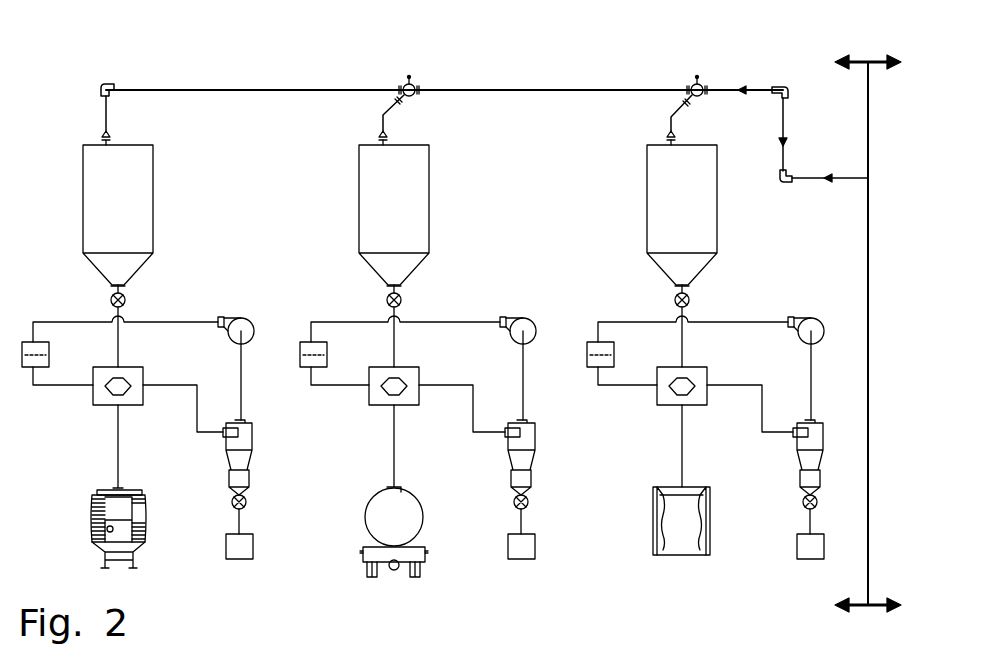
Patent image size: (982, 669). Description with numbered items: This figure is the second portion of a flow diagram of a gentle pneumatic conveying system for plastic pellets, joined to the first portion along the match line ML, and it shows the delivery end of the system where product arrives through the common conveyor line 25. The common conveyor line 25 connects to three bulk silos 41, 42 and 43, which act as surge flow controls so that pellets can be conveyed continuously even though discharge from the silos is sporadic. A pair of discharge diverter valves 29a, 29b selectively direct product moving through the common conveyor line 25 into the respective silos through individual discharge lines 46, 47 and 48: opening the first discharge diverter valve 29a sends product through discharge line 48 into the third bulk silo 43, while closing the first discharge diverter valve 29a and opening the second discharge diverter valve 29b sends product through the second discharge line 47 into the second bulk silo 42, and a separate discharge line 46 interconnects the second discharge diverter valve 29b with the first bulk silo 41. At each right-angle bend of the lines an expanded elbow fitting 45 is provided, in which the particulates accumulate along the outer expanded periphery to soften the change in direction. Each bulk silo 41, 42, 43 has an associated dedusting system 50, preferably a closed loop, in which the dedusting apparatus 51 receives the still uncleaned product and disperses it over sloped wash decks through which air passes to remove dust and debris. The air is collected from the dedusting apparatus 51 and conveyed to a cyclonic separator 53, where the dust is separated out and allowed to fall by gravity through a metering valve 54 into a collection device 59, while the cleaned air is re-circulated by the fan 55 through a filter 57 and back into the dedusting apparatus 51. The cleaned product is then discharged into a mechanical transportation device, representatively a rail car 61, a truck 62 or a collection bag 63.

The match line ML is at (868, 338).
The common conveyor line 25 is at (588, 88).
The first discharge diverter valve 29a is at (700, 96).
The second discharge diverter valve 29b is at (412, 96).
The first bulk silo 41 is at (138, 191).
The second bulk silo 42 is at (402, 200).
The third bulk silo 43 is at (661, 192).
The expanded elbow fitting 45 is at (106, 84).
The discharge line 46 is at (158, 92).
The second discharge line 47 is at (383, 113).
The discharge line 48 is at (672, 101).
The dedusting system 50 is at (66, 296).
The dedusting apparatus 51 is at (140, 368).
The cyclonic separator 53 is at (250, 422).
The metering valve 54 is at (247, 498).
The fan 55 is at (224, 316).
The filter 57 is at (49, 346).
The collection device 59 is at (253, 557).
The rail car 61 is at (135, 550).
The truck 62 is at (410, 520).
The collection bag 63 is at (683, 556).